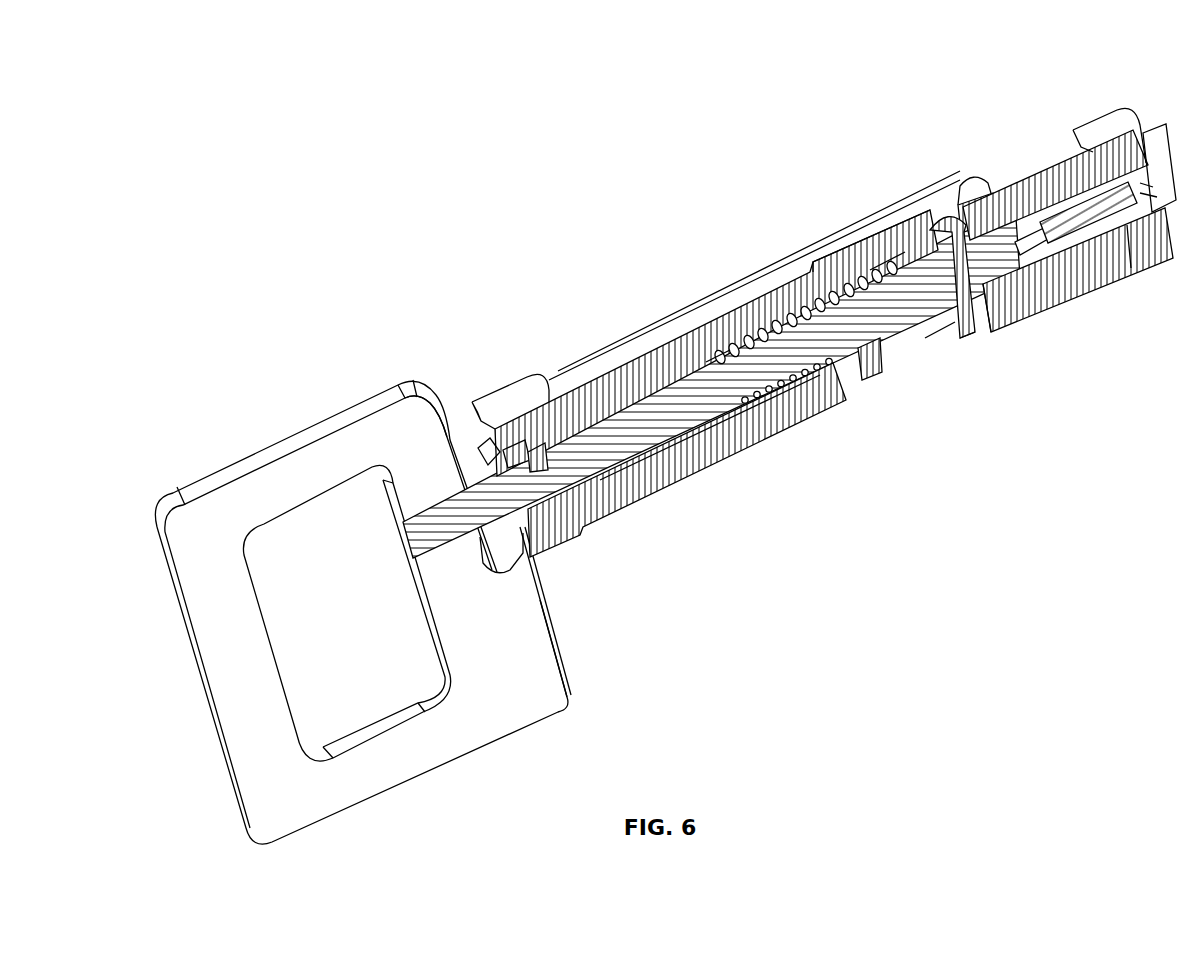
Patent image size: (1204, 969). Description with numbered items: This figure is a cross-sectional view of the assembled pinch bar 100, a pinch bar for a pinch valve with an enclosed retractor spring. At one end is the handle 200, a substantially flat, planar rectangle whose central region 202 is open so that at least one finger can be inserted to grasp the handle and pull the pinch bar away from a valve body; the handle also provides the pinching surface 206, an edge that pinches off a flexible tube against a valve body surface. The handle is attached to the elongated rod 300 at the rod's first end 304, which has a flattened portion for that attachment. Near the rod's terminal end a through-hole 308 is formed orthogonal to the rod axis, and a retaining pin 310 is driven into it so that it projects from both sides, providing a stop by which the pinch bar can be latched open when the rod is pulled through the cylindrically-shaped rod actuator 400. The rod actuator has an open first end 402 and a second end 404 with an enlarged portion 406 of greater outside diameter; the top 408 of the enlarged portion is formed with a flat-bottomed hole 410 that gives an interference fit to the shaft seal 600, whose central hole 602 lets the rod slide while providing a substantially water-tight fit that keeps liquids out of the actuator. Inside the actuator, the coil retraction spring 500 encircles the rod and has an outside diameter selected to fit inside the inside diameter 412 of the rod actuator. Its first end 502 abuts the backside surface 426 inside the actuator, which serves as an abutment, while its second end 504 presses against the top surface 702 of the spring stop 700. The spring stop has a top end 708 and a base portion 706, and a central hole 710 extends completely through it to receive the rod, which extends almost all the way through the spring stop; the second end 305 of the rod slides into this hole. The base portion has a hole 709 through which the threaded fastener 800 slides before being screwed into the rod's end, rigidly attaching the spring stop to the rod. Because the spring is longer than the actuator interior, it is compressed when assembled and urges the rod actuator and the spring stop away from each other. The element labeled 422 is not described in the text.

The pinch bar 100 is at (864, 55).
The handle 200 is at (440, 762).
The central region 202 is at (321, 703).
The pinching surface 206 is at (570, 670).
The rod 300 is at (650, 412).
The first end of the rod 304 is at (607, 443).
The second end of the rod 305 is at (1017, 297).
The through-hole 308 is at (930, 350).
The retaining pin 310 is at (973, 333).
The rod actuator 400 is at (795, 258).
The first end of the rod actuator 402 is at (962, 190).
The second end of the rod actuator 404 is at (557, 557).
The enlarged portion 406 is at (493, 392).
The top of the enlarged portion 408 is at (480, 450).
The flat-bottomed hole 410 is at (510, 455).
The inside diameter of the rod actuator 412 is at (765, 424).
The contact tips 422 is at (878, 247).
The backside surface 426 is at (703, 353).
The coil retraction spring 500 is at (748, 335).
The first end of the spring 502 is at (741, 430).
The second end of the spring 504 is at (903, 215).
The shaft seal 600 is at (490, 453).
The central hole of the shaft seal 602 is at (530, 420).
The spring stop 700 is at (1090, 265).
The top surface of the spring stop 702 is at (973, 337).
The base portion 706 is at (1101, 147).
The top end of the main portion 708 is at (883, 363).
The hole in the base portion 709 is at (1130, 250).
The central hole 710 is at (655, 458).
The threaded fastener 800 is at (1158, 205).